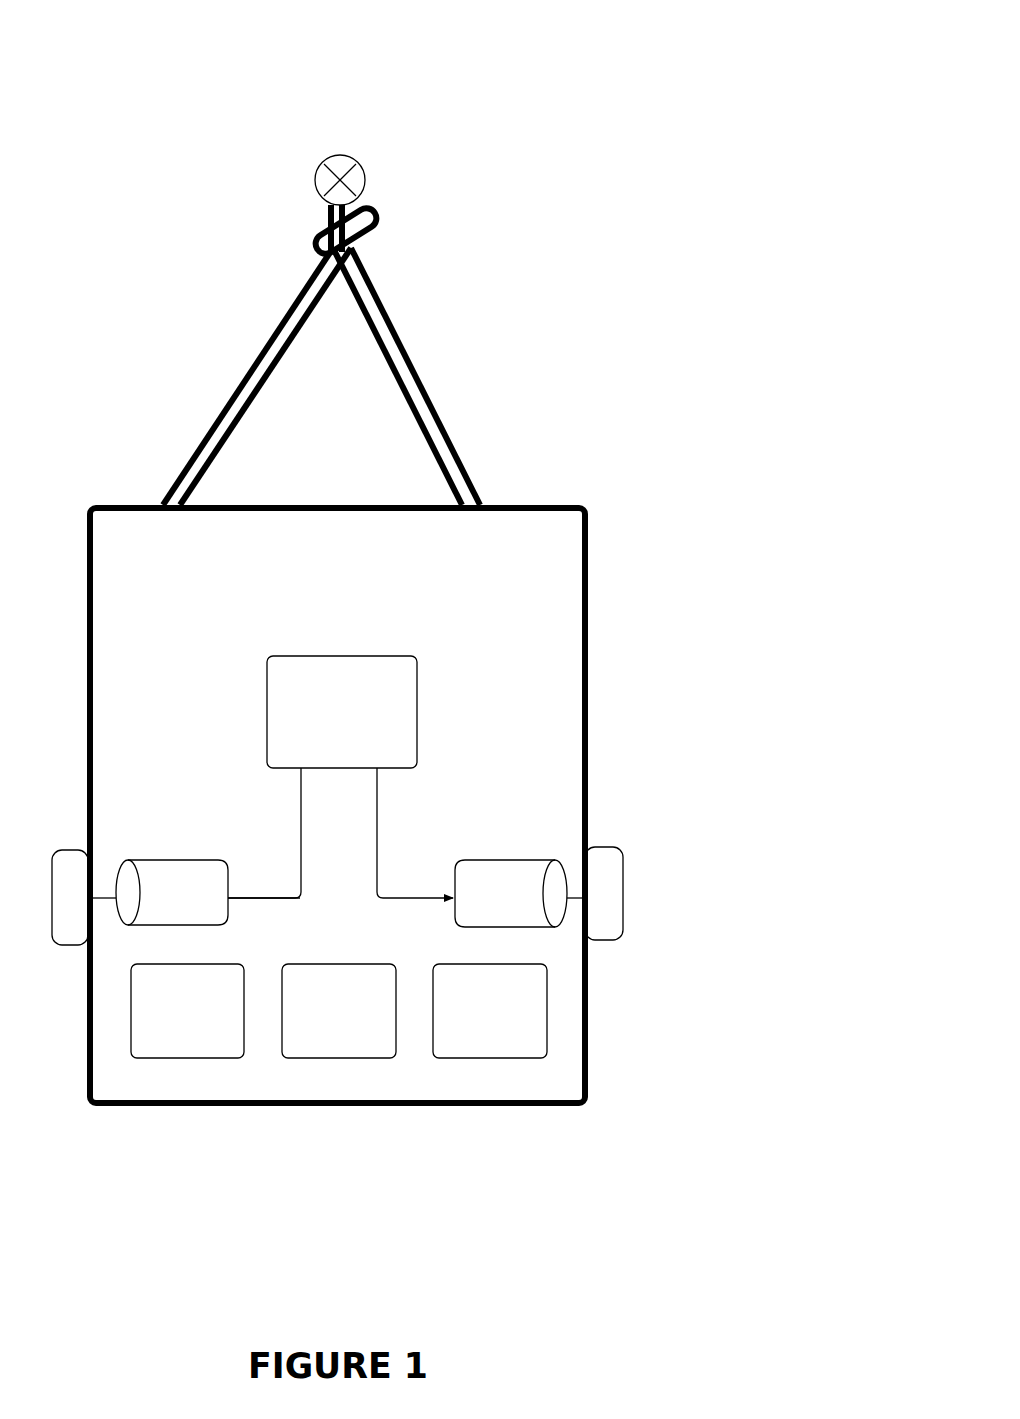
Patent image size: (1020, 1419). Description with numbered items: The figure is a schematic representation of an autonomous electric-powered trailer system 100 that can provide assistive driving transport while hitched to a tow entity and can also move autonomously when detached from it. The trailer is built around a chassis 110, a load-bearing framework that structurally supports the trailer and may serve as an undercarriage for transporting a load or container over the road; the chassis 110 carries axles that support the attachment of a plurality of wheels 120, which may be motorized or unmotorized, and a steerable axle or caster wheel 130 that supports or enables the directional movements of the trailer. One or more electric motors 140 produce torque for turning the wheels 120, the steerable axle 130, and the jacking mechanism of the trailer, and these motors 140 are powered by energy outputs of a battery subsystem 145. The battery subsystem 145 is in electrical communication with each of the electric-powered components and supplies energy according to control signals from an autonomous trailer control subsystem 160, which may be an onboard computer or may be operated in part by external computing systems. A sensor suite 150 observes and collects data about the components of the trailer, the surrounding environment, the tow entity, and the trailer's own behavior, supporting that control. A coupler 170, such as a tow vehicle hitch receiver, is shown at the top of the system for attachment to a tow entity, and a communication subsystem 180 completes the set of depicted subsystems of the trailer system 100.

The autonomous electric-powered trailer system 100 is at (740, 24).
The chassis 110 is at (590, 555).
The plurality of wheels 120 is at (627, 897).
The steerable axle/caster wheel 130 is at (384, 215).
The electric motors 140 is at (484, 903).
The battery subsystem 145 is at (326, 721).
The sensor suite 150 is at (171, 1016).
The autonomous trailer control subsystem 160 is at (322, 1016).
The coupler 170 is at (313, 180).
The communication subsystem 180 is at (474, 1016).